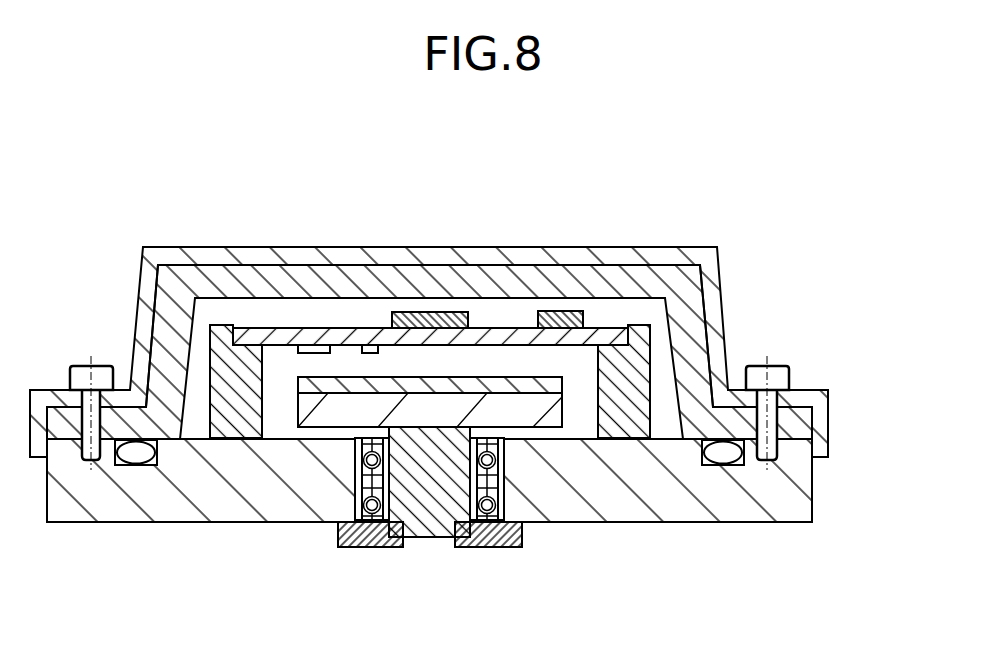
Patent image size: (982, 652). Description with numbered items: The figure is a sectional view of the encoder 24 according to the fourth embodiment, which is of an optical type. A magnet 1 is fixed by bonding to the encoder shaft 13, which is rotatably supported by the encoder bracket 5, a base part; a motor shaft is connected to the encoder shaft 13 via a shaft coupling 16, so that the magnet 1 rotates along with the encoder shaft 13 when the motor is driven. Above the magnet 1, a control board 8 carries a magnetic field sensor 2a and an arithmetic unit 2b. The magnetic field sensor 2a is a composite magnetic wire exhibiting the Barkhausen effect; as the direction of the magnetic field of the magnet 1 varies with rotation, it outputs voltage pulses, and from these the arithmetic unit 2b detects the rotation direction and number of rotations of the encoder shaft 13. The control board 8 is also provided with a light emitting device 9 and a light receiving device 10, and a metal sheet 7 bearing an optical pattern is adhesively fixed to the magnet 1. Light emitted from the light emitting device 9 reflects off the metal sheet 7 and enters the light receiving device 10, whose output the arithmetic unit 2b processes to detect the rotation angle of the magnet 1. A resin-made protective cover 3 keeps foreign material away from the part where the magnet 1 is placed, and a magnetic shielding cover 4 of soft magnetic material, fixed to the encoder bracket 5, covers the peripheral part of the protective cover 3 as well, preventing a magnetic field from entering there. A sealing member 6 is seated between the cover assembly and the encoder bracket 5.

The magnet 1 is at (482, 407).
The magnetic field sensor 2a is at (427, 320).
The arithmetic unit 2b is at (558, 322).
The protective cover 3 is at (602, 273).
The magnetic shielding cover 4 is at (655, 255).
The encoder bracket 5 is at (188, 512).
The sealing member 6 is at (722, 450).
The metal sheet 7 is at (520, 385).
The control board 8 is at (260, 335).
The light emitting device 9 is at (368, 348).
The light receiving device 10 is at (315, 348).
The encoder shaft 13 is at (428, 515).
The shaft coupling 16 is at (482, 535).
The encoder 24 is at (134, 208).